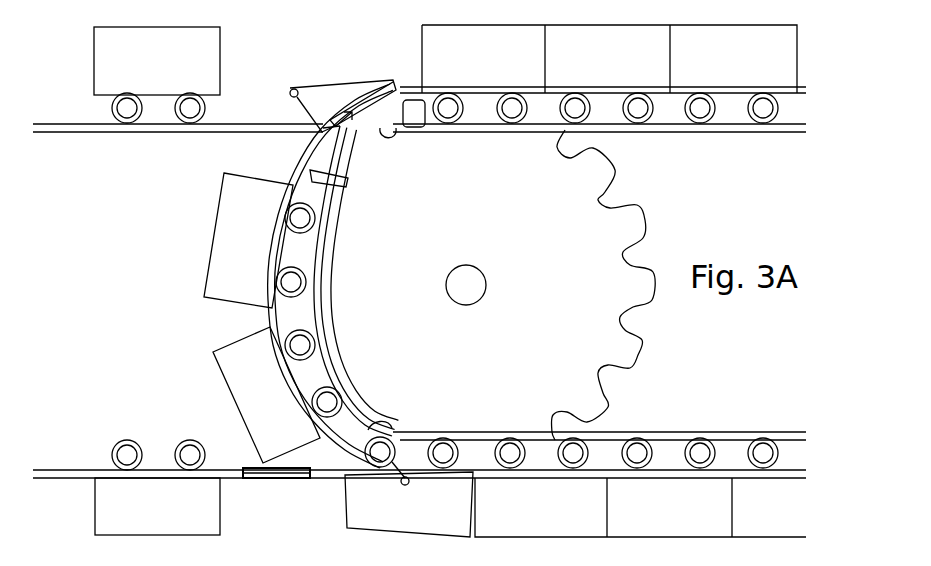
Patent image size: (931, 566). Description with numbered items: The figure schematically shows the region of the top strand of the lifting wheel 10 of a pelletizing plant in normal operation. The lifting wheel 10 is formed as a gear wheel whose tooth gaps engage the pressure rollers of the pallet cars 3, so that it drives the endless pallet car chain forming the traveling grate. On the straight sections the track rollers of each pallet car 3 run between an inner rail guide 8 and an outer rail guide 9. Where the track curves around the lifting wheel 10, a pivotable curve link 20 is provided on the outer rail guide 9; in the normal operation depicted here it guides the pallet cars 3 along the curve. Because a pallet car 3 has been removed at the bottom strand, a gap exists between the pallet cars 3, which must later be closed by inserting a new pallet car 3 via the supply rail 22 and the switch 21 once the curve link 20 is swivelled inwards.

The pallet car 3 is at (205, 60).
The inner rail guide 8 is at (755, 130).
The outer rail guide 9 is at (806, 90).
The lifting wheel 10 is at (602, 345).
The curve link 20 is at (352, 88).
The switch 21 is at (323, 130).
The supply rail 22 is at (62, 130).